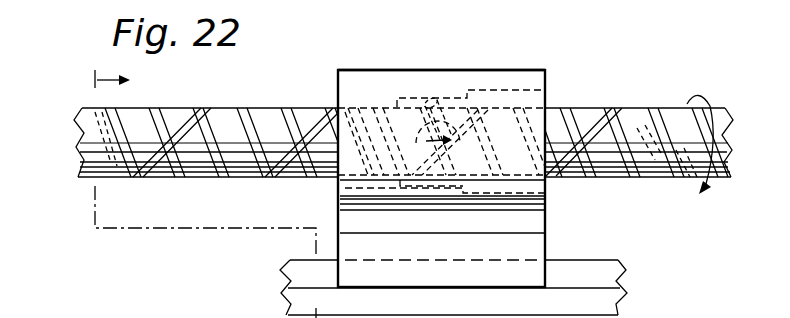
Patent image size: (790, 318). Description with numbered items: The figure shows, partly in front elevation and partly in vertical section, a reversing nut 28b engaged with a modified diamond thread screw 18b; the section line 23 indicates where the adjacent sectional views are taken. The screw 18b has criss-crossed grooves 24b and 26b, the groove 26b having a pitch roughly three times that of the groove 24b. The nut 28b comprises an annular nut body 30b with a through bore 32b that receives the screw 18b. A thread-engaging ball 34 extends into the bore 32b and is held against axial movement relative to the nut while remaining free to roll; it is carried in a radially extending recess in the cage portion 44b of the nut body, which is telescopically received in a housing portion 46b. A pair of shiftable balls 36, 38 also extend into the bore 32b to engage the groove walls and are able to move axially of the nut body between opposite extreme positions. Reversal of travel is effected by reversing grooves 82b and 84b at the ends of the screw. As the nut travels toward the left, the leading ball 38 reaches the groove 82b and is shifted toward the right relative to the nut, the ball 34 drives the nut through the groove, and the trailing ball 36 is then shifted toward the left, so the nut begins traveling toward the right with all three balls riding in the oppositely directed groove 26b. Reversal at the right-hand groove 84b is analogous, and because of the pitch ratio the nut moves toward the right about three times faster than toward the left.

The diamond thread screw 18b is at (656, 102).
The section line 23 is at (205, 194).
The groove 24b is at (206, 127).
The groove 26b is at (174, 127).
The reversing nut 28b is at (499, 62).
The annular nut body 30b is at (513, 76).
The through bore 32b is at (366, 108).
The thread-engaging ball 34 is at (427, 143).
The shiftable ball 36 is at (456, 147).
The shiftable ball 38 is at (433, 97).
The cage portion 44b is at (517, 90).
The housing portion 46b is at (357, 69).
The reversing groove 82b is at (110, 112).
The reversing groove 84b is at (683, 177).